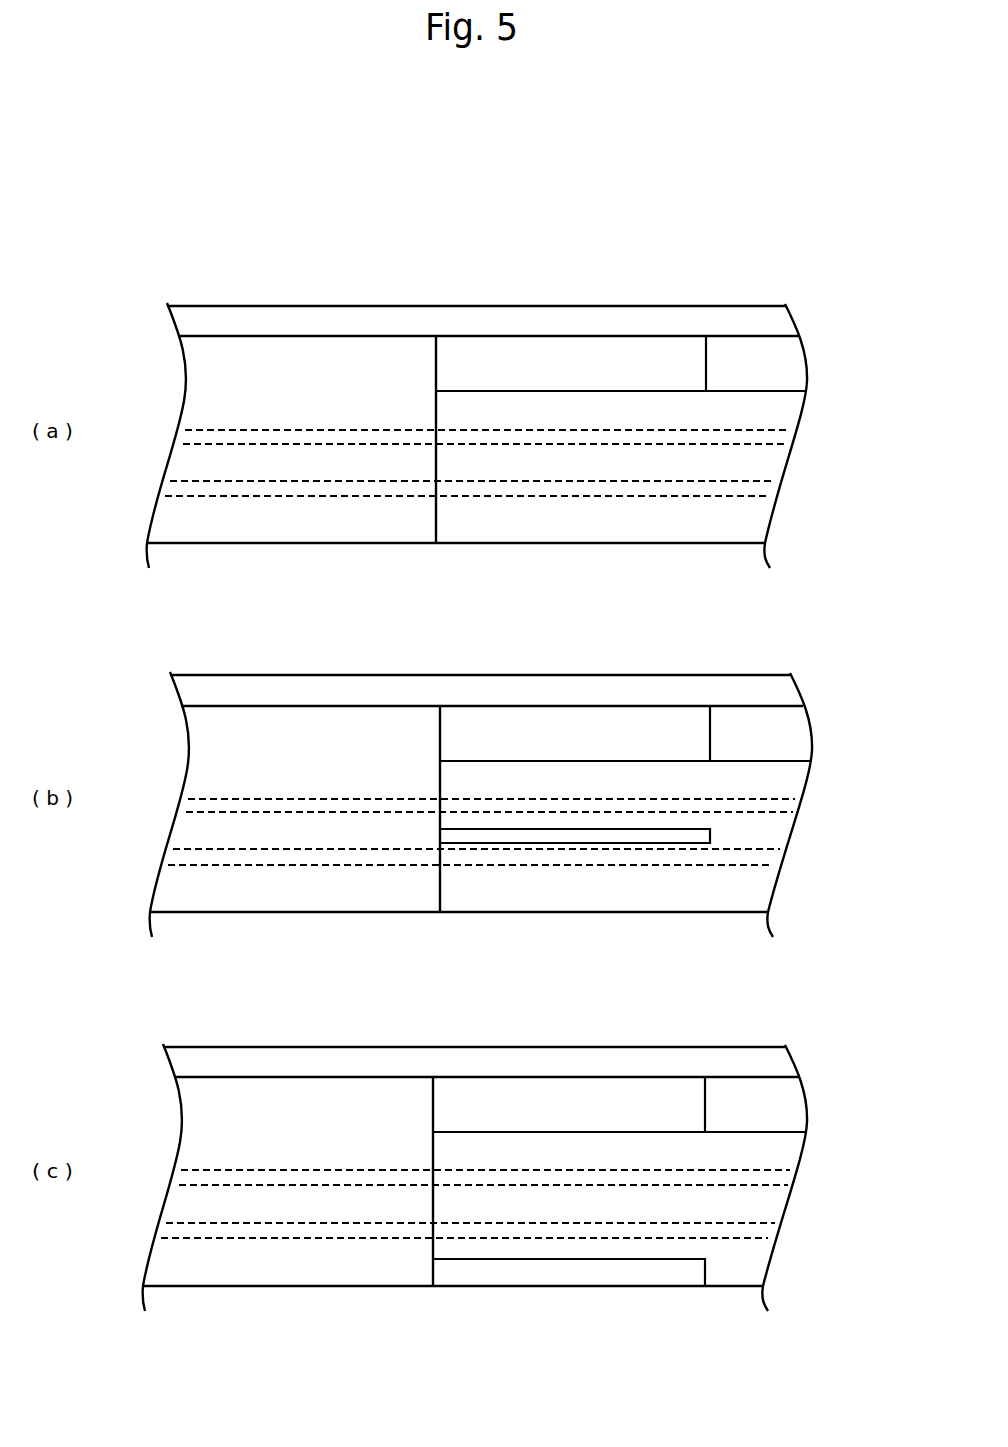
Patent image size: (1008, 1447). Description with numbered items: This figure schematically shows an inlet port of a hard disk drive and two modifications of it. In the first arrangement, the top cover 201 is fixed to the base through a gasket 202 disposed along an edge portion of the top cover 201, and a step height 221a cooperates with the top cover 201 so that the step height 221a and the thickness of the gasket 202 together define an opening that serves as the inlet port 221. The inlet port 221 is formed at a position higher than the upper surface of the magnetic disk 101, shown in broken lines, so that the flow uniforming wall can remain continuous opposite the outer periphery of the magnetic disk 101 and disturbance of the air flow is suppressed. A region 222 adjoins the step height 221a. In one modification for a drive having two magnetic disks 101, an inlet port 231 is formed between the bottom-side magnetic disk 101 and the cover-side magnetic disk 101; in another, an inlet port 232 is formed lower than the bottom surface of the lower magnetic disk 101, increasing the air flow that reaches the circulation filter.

The magnetic disk 101 is at (190, 432).
The top cover 201 is at (766, 318).
The gasket 202 is at (797, 358).
The inlet port 221 is at (612, 355).
The step height 221a is at (438, 356).
The cover portion 222 is at (298, 352).
The inlet port 231 is at (636, 838).
The inlet port 232 is at (798, 729).